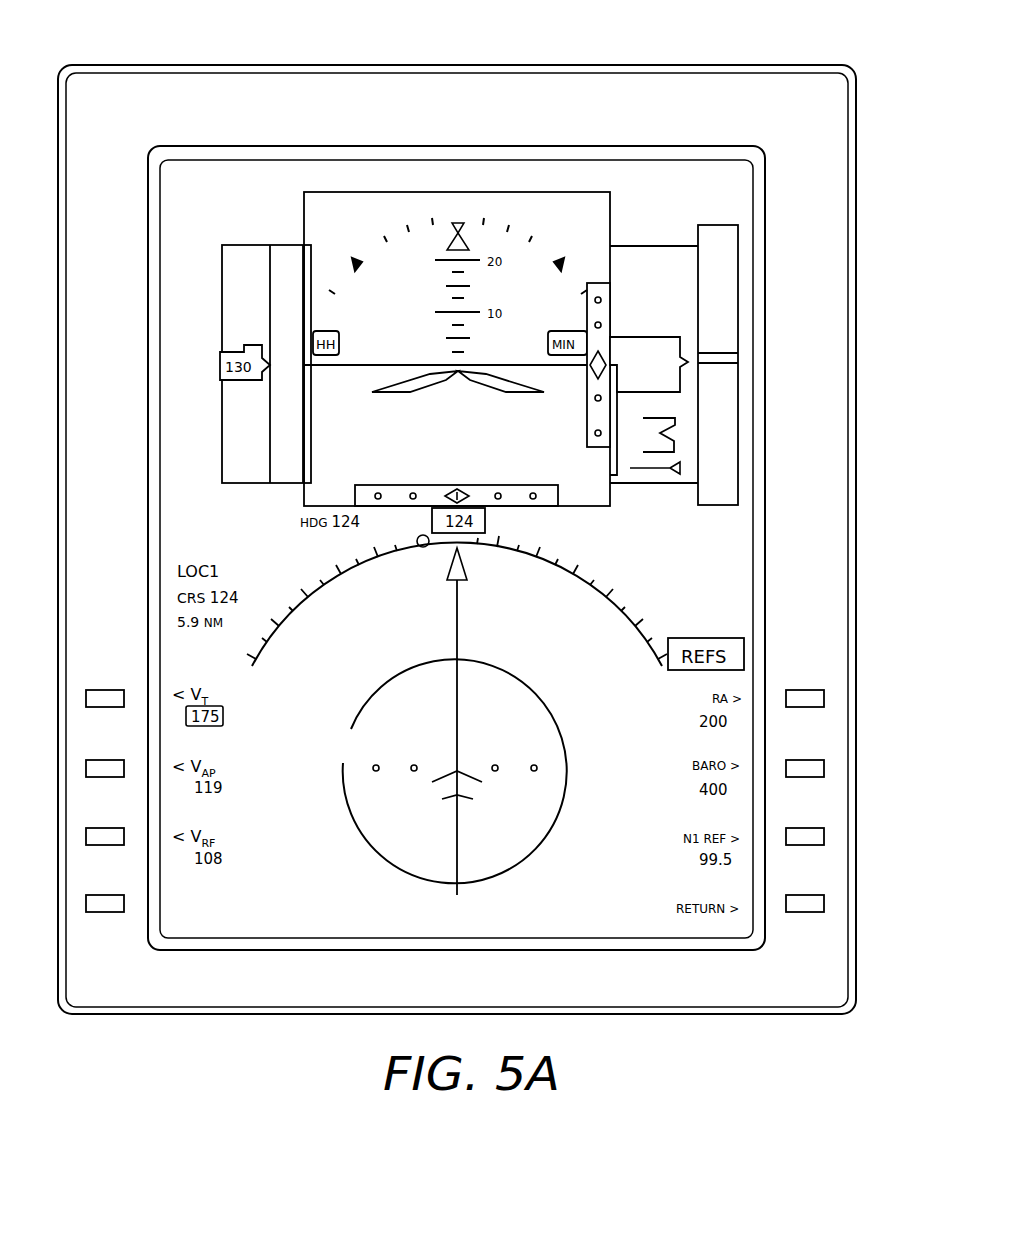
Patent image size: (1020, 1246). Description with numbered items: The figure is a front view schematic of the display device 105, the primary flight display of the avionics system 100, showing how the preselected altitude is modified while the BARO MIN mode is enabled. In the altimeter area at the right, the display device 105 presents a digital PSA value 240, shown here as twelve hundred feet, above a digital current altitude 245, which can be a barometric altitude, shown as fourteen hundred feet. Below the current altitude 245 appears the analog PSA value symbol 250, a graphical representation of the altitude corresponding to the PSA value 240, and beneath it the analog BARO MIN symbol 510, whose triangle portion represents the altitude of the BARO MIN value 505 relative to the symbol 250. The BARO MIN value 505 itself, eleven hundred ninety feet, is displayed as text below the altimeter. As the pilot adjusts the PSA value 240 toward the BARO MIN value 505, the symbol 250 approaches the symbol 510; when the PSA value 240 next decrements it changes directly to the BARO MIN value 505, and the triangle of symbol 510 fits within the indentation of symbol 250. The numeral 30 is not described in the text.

The display device 105 is at (540, 66).
The digital PSA value 240 is at (642, 200).
The digital current altitude 245 is at (669, 348).
The analog PSA value symbol 250 is at (673, 420).
The analog BARO MIN symbol 510 is at (680, 466).
The BARO MIN value 505 is at (665, 562).
The heading indicator 30 is at (250, 566).
The avionics system 100 is at (453, 771).